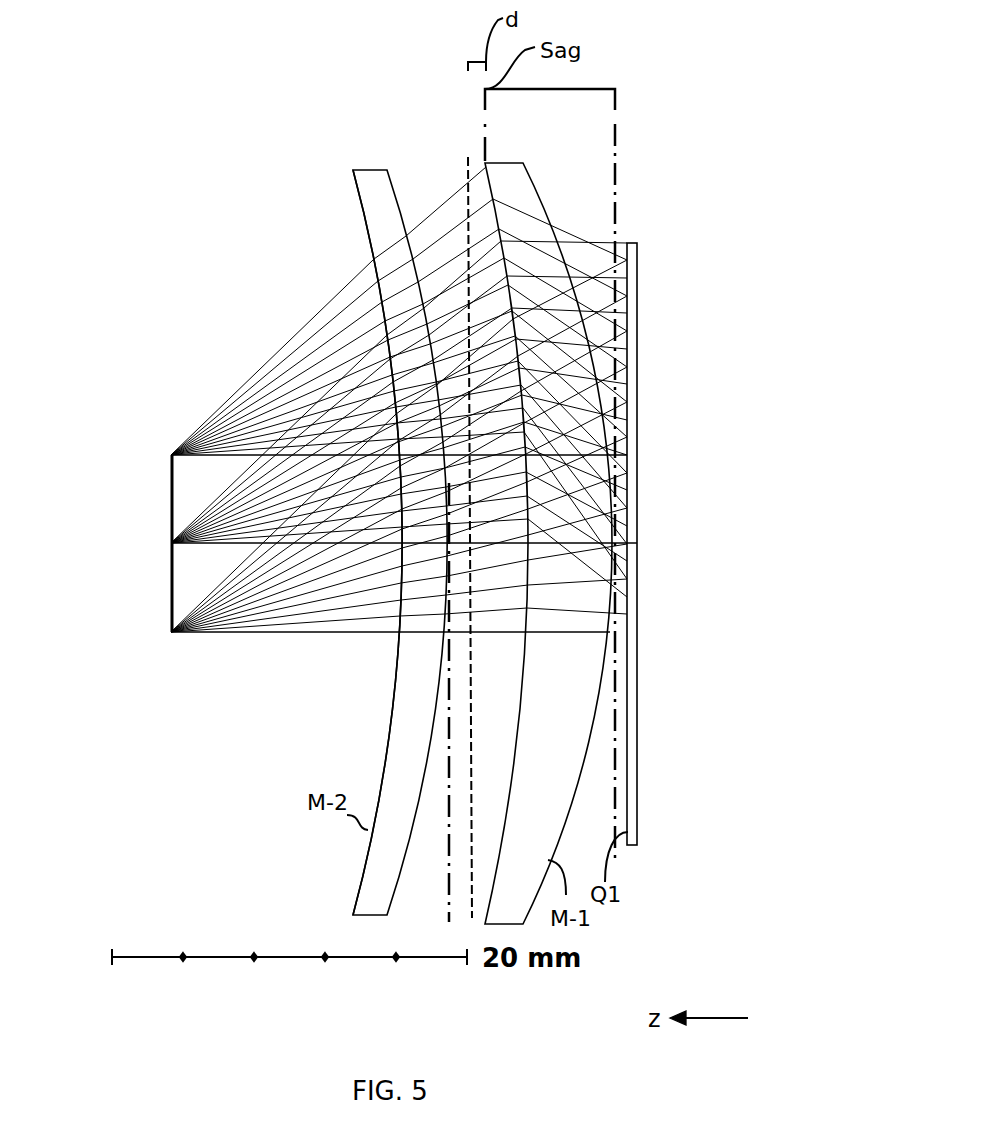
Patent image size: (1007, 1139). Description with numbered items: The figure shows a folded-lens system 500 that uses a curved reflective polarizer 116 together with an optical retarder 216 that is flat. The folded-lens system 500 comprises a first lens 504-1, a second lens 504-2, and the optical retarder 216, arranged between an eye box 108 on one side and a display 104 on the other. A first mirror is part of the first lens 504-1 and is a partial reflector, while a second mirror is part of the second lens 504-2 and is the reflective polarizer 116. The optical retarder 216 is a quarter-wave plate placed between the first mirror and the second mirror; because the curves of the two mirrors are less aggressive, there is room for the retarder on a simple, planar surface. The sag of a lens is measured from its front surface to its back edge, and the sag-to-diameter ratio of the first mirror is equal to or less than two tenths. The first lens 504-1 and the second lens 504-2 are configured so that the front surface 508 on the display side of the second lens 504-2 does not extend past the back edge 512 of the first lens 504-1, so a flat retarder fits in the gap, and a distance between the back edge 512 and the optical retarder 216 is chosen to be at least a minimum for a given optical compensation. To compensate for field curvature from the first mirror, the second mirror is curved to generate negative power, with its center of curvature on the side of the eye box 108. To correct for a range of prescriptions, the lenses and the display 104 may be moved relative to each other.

The folded-lens system 500 is at (692, 71).
The back edge of the first lens 512 is at (485, 110).
The optical retarder 216 is at (468, 172).
The second lens 504-2 is at (377, 197).
The first lens 504-1 is at (517, 188).
The display 104 is at (637, 413).
The eye box 108 is at (171, 500).
The reflective polarizer 116 is at (381, 762).
The front surface of the second lens 508 is at (449, 862).